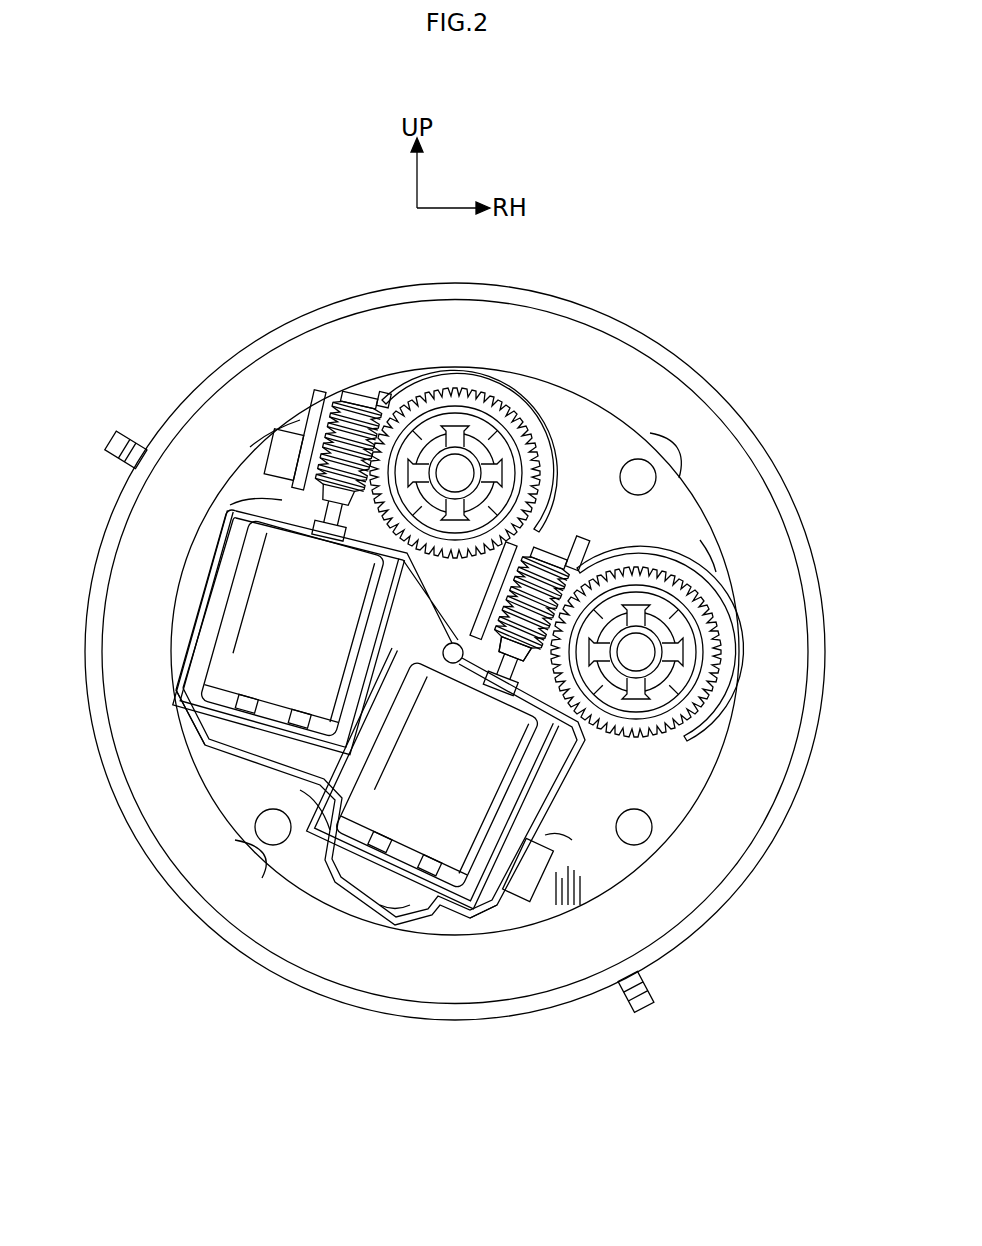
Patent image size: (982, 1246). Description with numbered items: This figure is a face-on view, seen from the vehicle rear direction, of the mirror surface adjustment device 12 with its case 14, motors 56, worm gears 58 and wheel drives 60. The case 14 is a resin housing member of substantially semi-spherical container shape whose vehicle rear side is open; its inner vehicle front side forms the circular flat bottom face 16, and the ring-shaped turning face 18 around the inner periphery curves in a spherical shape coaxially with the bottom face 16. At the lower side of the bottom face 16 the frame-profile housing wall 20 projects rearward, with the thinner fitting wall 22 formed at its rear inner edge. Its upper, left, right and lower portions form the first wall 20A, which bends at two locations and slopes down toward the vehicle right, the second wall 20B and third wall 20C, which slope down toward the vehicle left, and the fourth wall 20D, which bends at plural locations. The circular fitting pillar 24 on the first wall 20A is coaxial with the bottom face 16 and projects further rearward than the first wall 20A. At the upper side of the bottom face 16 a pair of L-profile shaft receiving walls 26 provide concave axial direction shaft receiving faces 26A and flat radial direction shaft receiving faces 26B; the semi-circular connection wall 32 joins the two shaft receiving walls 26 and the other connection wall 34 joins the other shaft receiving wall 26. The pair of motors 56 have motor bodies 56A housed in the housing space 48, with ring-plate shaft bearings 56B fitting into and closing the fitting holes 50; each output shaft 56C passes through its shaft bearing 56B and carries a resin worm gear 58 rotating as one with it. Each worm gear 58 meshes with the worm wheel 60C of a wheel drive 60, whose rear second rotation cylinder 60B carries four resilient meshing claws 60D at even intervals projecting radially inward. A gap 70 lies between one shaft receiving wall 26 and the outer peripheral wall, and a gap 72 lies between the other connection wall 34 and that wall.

The mirror surface adjustment device 12 is at (193, 262).
The case 14 is at (712, 385).
The bottom face 16 is at (612, 880).
The turning face 18 is at (745, 468).
The housing wall 20 is at (343, 880).
The first wall 20A is at (423, 610).
The second wall 20B is at (190, 598).
The third wall 20C is at (552, 848).
The fourth wall 20D is at (250, 793).
The fitting wall 22 is at (395, 913).
The fitting pillar 24 is at (443, 653).
The shaft receiving walls 26 is at (322, 418).
The axial direction shaft receiving face 26A is at (372, 410).
The radial direction shaft receiving face 26B is at (350, 407).
The connection wall 32 is at (562, 462).
The connection wall 34 is at (707, 557).
The housing space 48 is at (323, 783).
The fitting holes 50 is at (315, 611).
The motors 56 is at (232, 763).
The motor body 56A is at (170, 692).
The shaft bearing 56B is at (282, 545).
The output shaft 56C is at (320, 530).
The worm gear 58 is at (293, 470).
The wheel drives 60 is at (540, 450).
The second rotation cylinder 60B is at (433, 403).
The worm wheel 60C is at (523, 430).
The meshing claws 60D is at (491, 468).
The gap 70 is at (282, 500).
The gap 72 is at (540, 832).